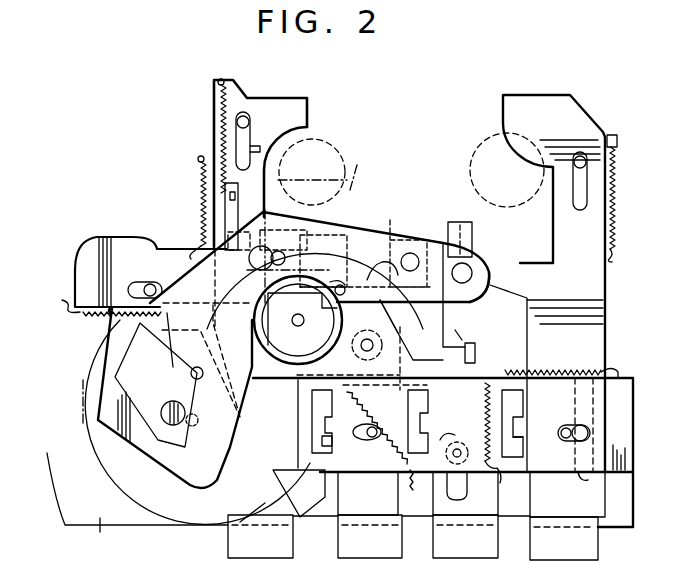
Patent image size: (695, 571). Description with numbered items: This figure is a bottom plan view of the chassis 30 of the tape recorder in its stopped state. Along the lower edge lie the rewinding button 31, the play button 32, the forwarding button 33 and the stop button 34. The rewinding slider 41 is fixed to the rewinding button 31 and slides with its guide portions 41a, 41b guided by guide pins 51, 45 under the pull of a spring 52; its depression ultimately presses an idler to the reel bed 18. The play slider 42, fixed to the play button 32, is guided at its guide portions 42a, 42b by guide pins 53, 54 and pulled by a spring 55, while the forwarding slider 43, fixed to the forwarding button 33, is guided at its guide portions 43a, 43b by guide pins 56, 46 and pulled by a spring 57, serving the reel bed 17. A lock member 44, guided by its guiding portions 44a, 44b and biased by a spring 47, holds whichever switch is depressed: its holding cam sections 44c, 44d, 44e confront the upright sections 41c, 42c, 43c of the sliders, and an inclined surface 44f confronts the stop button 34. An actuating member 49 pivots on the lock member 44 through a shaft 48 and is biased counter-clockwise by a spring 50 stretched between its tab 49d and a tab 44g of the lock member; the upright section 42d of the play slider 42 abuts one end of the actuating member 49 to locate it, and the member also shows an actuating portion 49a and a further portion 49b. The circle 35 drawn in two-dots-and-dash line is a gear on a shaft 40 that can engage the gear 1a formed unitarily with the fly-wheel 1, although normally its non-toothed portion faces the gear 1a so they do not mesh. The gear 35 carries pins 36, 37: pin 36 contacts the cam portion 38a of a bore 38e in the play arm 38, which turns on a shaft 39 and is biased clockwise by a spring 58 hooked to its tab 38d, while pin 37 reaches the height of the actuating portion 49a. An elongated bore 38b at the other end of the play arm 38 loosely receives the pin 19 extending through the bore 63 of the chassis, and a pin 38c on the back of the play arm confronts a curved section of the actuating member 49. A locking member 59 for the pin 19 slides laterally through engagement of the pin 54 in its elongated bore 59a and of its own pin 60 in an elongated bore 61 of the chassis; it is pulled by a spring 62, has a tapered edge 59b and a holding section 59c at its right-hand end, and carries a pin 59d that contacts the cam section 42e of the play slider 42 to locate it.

The fly-wheel 1 is at (308, 227).
The gear 1a is at (260, 300).
The reel bed 17 is at (326, 148).
The reel bed 18 is at (478, 142).
The pin 19 is at (473, 275).
The chassis 30 is at (288, 505).
The rewinding button 31 is at (599, 548).
The play button 32 is at (499, 548).
The forwarding button 33 is at (403, 548).
The stop button 34 is at (294, 548).
The gear 35 is at (83, 443).
The pin 36 is at (164, 405).
The pin 37 is at (190, 373).
The play arm 38 is at (97, 387).
The cam portion 38a is at (178, 447).
The elongated bore 38b is at (470, 263).
The pin 38c is at (325, 276).
The tab 38d is at (182, 245).
The bore 38e is at (160, 443).
The shaft 39 is at (277, 251).
The shaft 40 is at (196, 426).
The rewinding slider 41 is at (606, 302).
The guide portion 41a is at (576, 199).
The guide portion 41b is at (567, 494).
The upright section 41c is at (523, 447).
The play slider 42 is at (472, 342).
The guide portion 42a is at (465, 494).
The guide portion 42b is at (408, 316).
The upright section 42c is at (451, 428).
The upright section 42d is at (476, 352).
The cam section 42e is at (462, 322).
The forwarding slider 43 is at (308, 102).
The guide portion 43a is at (272, 152).
The guide portion 43b is at (368, 493).
The upright section 43c is at (299, 488).
The lock member 44 is at (633, 376).
The guiding portion 44a is at (573, 425).
The guiding portion 44b is at (320, 435).
The holding cam section 44c is at (521, 425).
The holding cam section 44d is at (435, 421).
The holding cam section 44e is at (318, 406).
The inclined surface 44f is at (265, 503).
The tab 44g is at (416, 492).
The guide pin 45 is at (593, 432).
The guide pin 46 is at (362, 442).
The spring 47 is at (572, 366).
The shaft 48 is at (360, 345).
The actuating member 49 is at (403, 353).
The actuating portion 49a is at (178, 342).
The lever arm 49b is at (323, 260).
The tab 49d is at (366, 353).
The spring 50 is at (377, 428).
The guide pin 51 is at (580, 156).
The spring 52 is at (618, 190).
The guide pin 53 is at (465, 447).
The guide pin 54 is at (392, 232).
The spring 55 is at (497, 447).
The guide pin 56 is at (252, 118).
The spring 57 is at (218, 124).
The spring 58 is at (200, 183).
The locking member 59 is at (92, 240).
The elongated bore 59a is at (365, 253).
The tapered edge 59b is at (459, 227).
The holding section 59c is at (78, 312).
The pin 59d is at (385, 266).
The pin 60 is at (150, 284).
The elongated bore 61 is at (128, 283).
The spring 62 is at (98, 320).
The bore 63 is at (472, 230).